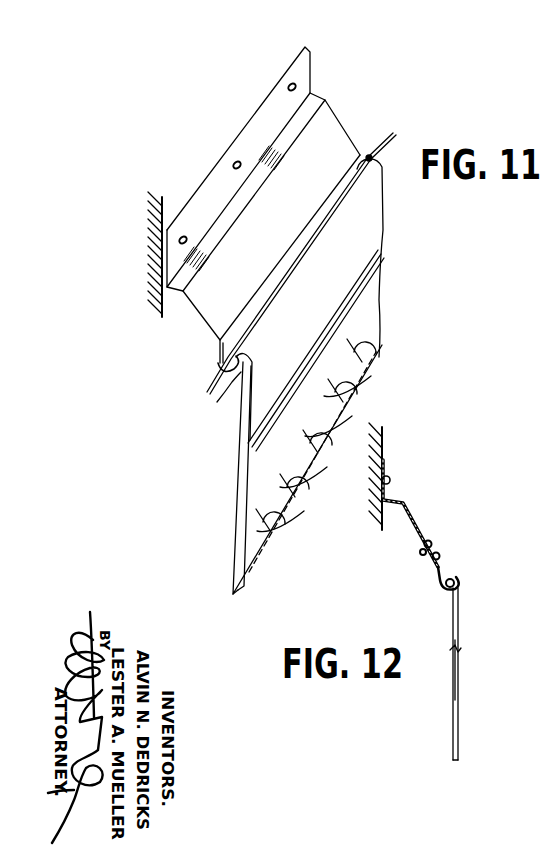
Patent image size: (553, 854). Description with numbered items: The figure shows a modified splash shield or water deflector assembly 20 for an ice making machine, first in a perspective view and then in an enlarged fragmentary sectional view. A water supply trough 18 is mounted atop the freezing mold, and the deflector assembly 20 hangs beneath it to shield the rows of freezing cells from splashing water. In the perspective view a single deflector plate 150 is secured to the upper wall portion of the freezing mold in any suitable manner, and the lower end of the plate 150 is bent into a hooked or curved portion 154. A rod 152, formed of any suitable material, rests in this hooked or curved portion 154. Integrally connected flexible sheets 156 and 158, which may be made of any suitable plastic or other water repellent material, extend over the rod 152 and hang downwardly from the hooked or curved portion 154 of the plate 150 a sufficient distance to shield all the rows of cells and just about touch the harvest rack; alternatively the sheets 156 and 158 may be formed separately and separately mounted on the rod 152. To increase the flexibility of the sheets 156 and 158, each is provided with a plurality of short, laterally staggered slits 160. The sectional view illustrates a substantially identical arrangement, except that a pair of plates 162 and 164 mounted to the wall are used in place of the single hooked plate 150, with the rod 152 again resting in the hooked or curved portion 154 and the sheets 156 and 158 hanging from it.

In FIG. 11, the water supply trough 18 is at (153, 258).
In FIG. 12, the water supply trough 18 is at (380, 502).
In FIG. 11, the splash shield or water deflector assembly 20 is at (392, 272).
In FIG. 12, the splash shield or water deflector assembly 20 is at (464, 666).
In FIG. 11, the deflector plate 150 is at (333, 124).
In FIG. 11, the rod 152 is at (391, 137).
In FIG. 12, the rod 152 is at (455, 580).
In FIG. 11, the hooked or curved portion 154 is at (219, 400).
In FIG. 12, the hooked or curved portion 154 is at (450, 599).
In FIG. 11, the flexible sheet 156 is at (237, 572).
In FIG. 12, the flexible sheet 156 is at (450, 733).
In FIG. 11, the flexible sheet 158 is at (272, 540).
In FIG. 12, the flexible sheet 158 is at (458, 700).
In FIG. 11, the slits 160 is at (318, 440).
In FIG. 12, the plate 162 is at (422, 530).
In FIG. 12, the plate 164 is at (433, 572).